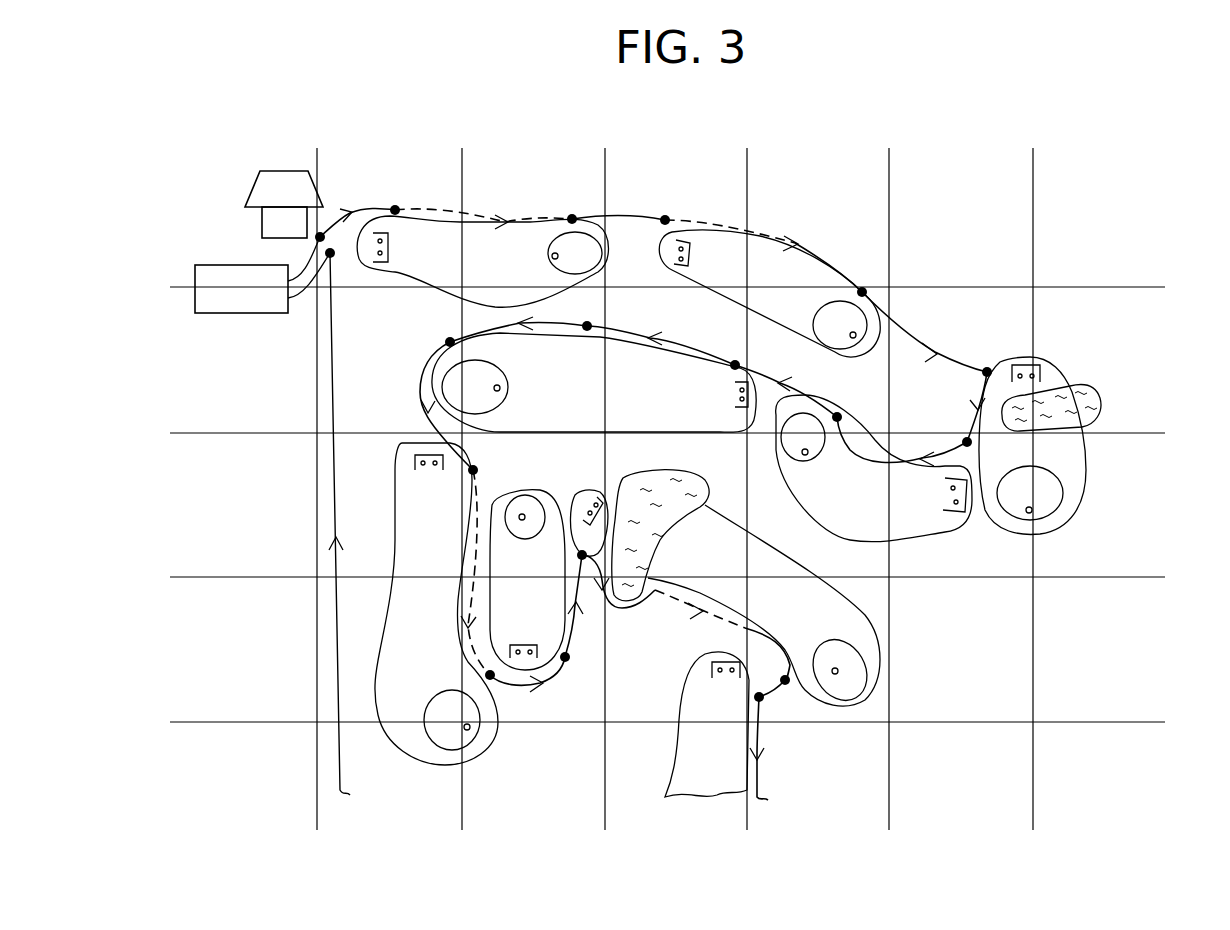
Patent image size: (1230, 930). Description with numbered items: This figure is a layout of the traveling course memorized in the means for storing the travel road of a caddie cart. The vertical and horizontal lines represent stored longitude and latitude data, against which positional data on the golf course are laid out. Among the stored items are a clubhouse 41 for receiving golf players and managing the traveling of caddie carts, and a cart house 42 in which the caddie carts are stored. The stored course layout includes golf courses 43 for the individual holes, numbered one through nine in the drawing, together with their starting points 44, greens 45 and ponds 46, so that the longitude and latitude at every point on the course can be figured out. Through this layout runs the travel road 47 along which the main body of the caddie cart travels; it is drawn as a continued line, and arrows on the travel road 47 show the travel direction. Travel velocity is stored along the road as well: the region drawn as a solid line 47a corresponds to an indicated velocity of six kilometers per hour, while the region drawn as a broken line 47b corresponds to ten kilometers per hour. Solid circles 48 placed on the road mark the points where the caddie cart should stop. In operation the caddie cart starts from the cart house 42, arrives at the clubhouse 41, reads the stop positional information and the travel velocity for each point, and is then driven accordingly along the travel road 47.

The clubhouse 41 is at (273, 225).
The cart house 42 is at (233, 300).
The golf courses 43 is at (722, 252).
The starting points 44 is at (683, 240).
The greens 45 is at (858, 322).
The ponds 46 is at (1100, 400).
The travel road 47 is at (653, 459).
The solid line 47a is at (368, 212).
The broken line 47b is at (478, 213).
The solid circles 48 is at (572, 219).